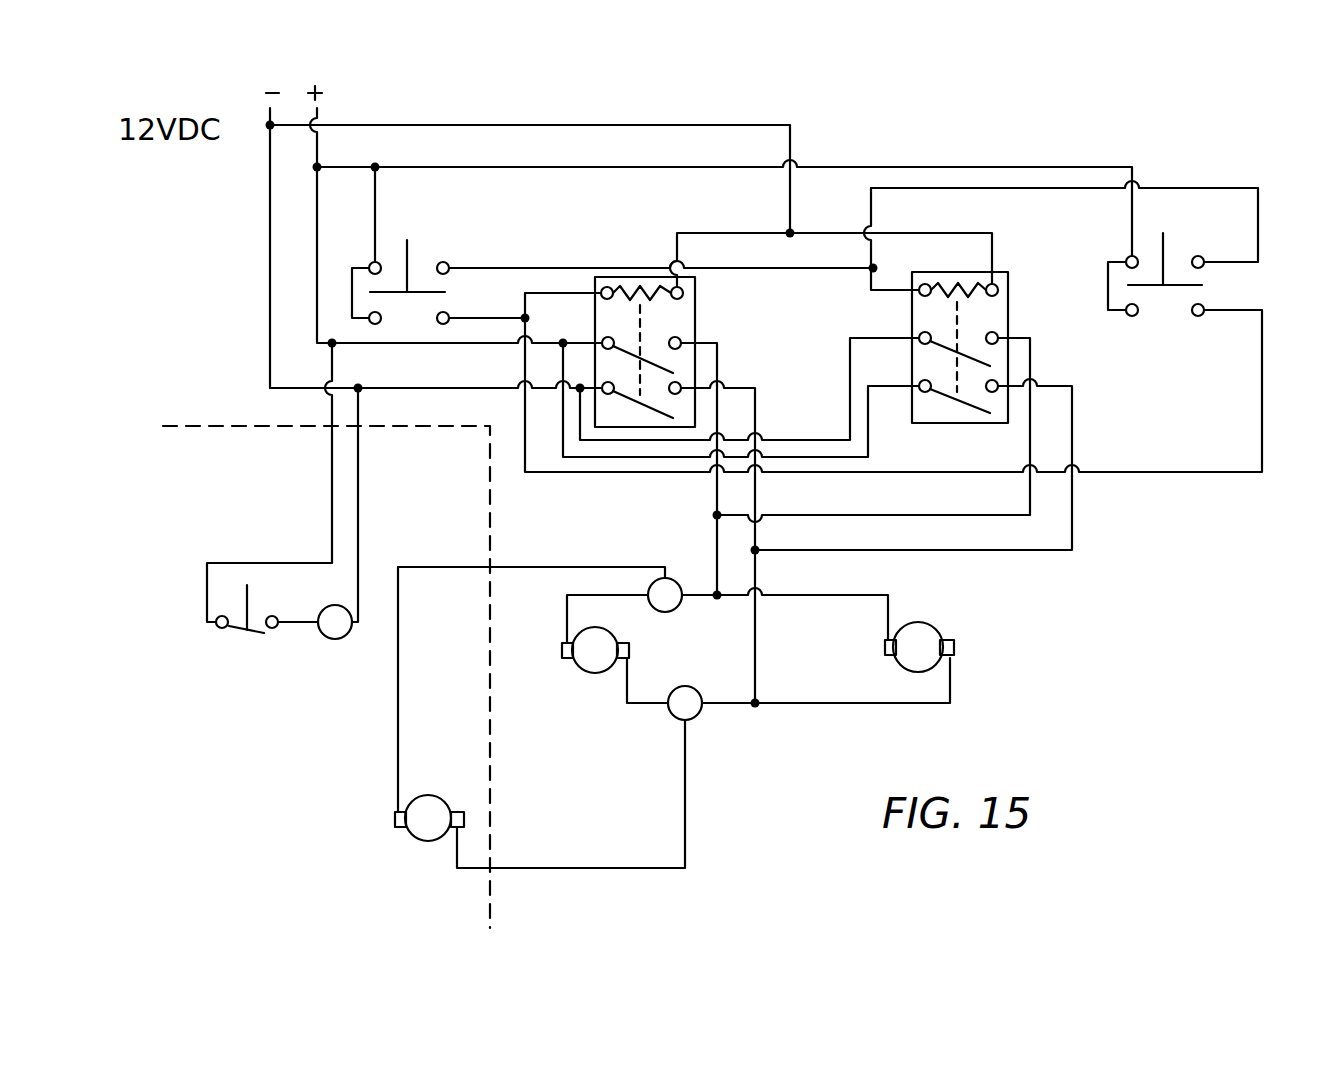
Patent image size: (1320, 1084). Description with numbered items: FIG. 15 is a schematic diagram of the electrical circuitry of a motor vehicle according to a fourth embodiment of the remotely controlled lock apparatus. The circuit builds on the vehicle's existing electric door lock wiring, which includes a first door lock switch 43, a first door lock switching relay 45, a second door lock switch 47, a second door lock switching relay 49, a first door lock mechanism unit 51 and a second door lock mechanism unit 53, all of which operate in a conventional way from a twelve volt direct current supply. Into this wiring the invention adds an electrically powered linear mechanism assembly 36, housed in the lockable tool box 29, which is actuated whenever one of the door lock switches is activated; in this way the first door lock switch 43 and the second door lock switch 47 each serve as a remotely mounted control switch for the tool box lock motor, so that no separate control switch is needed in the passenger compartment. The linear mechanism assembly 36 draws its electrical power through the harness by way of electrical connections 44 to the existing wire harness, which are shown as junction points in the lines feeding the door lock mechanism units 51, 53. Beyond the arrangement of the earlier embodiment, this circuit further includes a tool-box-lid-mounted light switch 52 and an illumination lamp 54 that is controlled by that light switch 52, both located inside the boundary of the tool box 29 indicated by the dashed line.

The lockable tool box 29 is at (226, 424).
The electrically powered linear mechanism assembly 36 is at (428, 843).
The first door lock switch 43 is at (437, 225).
The electrical connections 44 is at (668, 579).
The first door lock switching relay 45 is at (637, 258).
The second door lock switch 47 is at (1194, 254).
The second door lock switching relay 49 is at (1031, 284).
The first door lock mechanism unit 51 is at (600, 692).
The tool-box-lid-mounted light switch 52 is at (250, 649).
The second door lock mechanism unit 53 is at (957, 612).
The illumination lamp 54 is at (337, 645).